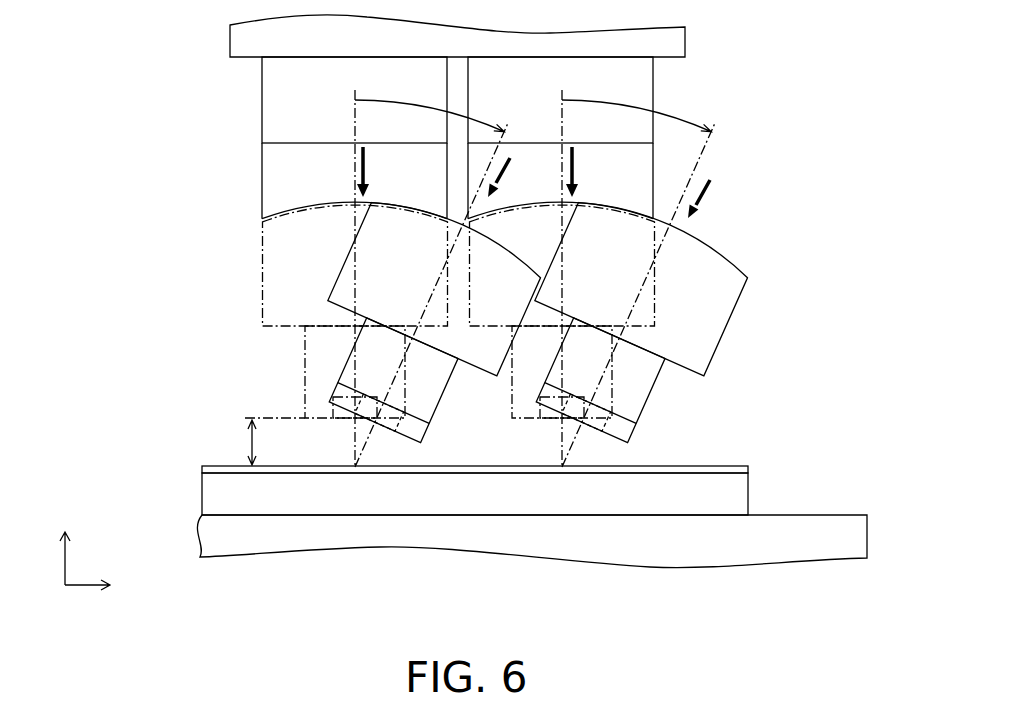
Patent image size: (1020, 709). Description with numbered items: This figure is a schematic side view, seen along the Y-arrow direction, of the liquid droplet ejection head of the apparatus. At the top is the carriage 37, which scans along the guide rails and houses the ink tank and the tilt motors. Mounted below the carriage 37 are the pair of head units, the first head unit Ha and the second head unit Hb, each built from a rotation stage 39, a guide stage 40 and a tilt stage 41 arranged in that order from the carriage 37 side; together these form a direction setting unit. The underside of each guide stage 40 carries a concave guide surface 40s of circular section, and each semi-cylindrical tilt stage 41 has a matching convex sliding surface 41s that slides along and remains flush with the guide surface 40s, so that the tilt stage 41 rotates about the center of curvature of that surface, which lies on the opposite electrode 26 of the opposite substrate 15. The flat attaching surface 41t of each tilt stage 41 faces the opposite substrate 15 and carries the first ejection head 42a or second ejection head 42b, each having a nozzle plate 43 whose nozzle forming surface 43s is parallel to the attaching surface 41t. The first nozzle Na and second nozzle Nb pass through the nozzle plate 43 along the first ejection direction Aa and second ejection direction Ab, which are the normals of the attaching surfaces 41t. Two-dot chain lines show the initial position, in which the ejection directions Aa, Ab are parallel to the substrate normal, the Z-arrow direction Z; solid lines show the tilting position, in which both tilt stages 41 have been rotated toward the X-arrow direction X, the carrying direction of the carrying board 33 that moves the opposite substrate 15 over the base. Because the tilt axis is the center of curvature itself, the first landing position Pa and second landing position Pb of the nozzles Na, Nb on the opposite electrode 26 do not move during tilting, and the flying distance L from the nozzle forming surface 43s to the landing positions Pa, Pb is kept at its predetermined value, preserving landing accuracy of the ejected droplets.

The carriage 37 is at (181, 49).
The rotation stage 39 is at (262, 100).
The guide stage 40 is at (262, 160).
The guide surface 40s is at (285, 220).
The tilt stage 41 is at (262, 262).
The sliding surface 41s is at (330, 205).
The attaching surface 41t is at (345, 304).
The first ejection head 42a is at (305, 365).
The second ejection head 42b is at (655, 395).
The nozzle plate 43 is at (340, 389).
The nozzle forming surface 43s is at (352, 418).
The opposite electrode 26 is at (216, 466).
The opposite substrate 15 is at (205, 487).
The carrying board 33 is at (200, 540).
The first head unit Ha is at (236, 219).
The second head unit Hb is at (779, 209).
The first ejection direction Aa is at (448, 171).
The second ejection direction Ab is at (652, 182).
The first nozzle Na is at (345, 395).
The second nozzle Nb is at (552, 395).
The flying distance L is at (242, 442).
The first landing position Pa is at (353, 470).
The second landing position Pb is at (560, 470).
The X-arrow direction X is at (101, 586).
The Z-arrow direction Z is at (62, 542).